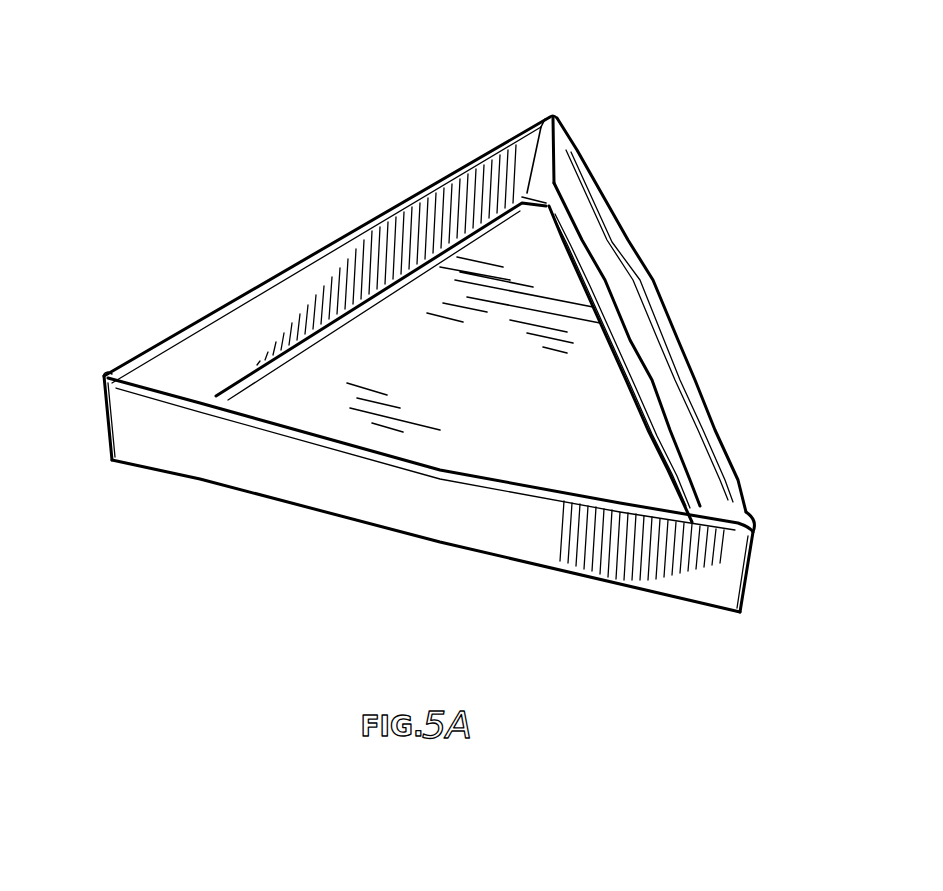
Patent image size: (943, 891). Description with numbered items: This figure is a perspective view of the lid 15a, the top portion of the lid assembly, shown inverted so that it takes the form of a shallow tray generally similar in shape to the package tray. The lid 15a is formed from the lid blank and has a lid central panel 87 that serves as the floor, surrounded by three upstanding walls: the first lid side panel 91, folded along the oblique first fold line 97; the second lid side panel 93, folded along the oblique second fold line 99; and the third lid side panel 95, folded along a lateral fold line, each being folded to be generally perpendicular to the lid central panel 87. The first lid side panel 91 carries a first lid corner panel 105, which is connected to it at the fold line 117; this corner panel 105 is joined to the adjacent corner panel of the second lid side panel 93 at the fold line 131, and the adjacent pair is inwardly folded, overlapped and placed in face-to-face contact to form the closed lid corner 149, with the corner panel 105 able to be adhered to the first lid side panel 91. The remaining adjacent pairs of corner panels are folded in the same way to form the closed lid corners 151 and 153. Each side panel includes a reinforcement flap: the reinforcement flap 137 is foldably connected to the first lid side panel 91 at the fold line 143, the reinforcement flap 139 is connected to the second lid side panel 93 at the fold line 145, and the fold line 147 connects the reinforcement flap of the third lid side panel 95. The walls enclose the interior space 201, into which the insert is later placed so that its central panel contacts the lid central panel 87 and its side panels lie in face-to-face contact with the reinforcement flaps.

The lid 15a is at (435, 331).
The lid central panel 87 is at (510, 379).
The first lid side panel 91 is at (633, 401).
The second lid side panel 93 is at (347, 320).
The third lid side panel 95 is at (447, 515).
The first fold line 97 is at (550, 213).
The second fold line 99 is at (237, 378).
The first lid corner panel 105 is at (537, 170).
The fold line 117 is at (540, 164).
The fold line 131 is at (538, 201).
The reinforcement flap 137 is at (623, 297).
The reinforcement flap 139 is at (250, 313).
The fold line 143 is at (626, 235).
The fold line 145 is at (362, 217).
The fold line 147 is at (288, 430).
The lid corner 149 is at (553, 100).
The lid corner 151 is at (768, 568).
The lid corner 153 is at (96, 433).
The interior space 201 is at (338, 260).